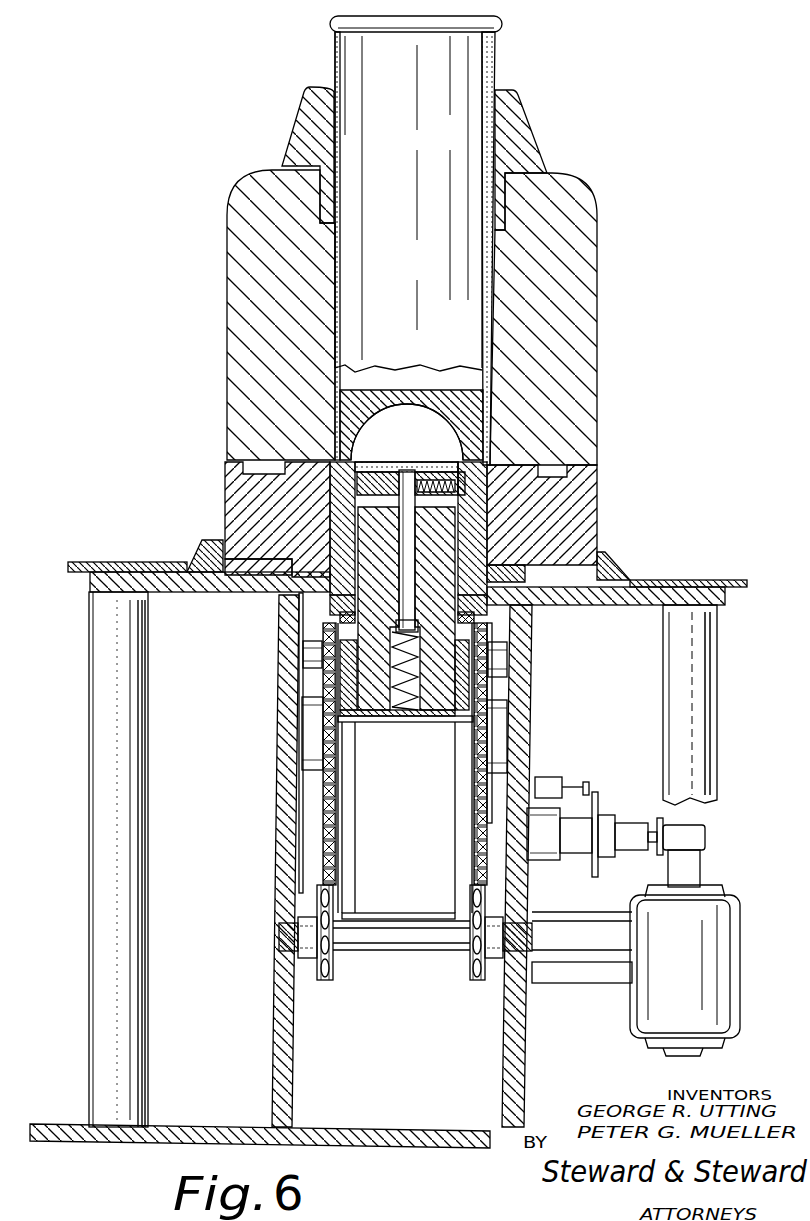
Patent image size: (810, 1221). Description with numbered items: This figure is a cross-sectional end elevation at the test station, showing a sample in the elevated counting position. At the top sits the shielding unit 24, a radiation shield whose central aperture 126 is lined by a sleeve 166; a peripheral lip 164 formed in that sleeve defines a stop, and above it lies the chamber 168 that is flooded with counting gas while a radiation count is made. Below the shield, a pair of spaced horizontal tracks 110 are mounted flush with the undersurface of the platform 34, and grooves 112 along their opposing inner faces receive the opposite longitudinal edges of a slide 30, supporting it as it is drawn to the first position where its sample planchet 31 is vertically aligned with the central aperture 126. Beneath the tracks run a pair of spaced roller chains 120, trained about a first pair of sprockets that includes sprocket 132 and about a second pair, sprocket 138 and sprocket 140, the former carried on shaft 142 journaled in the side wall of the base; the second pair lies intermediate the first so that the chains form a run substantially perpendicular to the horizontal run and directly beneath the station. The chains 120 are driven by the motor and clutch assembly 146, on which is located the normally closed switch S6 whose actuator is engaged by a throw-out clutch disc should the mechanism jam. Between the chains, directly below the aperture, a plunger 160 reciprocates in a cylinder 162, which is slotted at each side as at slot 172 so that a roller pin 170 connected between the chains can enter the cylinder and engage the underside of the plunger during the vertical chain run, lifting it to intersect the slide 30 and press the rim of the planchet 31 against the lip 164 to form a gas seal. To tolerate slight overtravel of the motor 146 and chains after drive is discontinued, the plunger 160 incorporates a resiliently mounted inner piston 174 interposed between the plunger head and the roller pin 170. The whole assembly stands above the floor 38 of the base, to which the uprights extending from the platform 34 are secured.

The shielding unit 24 is at (598, 213).
The slide 30 is at (520, 574).
The sample planchet 31 is at (445, 471).
The platform 34 is at (125, 562).
The floor 38 is at (341, 1130).
The tracks 110 is at (330, 604).
The grooves 112 is at (340, 622).
The roller chains 120 is at (333, 984).
The central aperture 126 is at (478, 484).
The sprocket 132 is at (305, 657).
The sprocket 138 is at (316, 960).
The sprocket 140 is at (307, 722).
The shaft 142 is at (376, 940).
The motor and clutch assembly 146 is at (703, 876).
The plunger 160 is at (455, 531).
The sleeve or cylinder 162 is at (343, 684).
The peripheral lip 164 is at (358, 462).
The sleeve 166 is at (478, 478).
The chamber 168 is at (455, 405).
The roller pin 170 is at (373, 725).
The slot 172 is at (472, 795).
The inner piston 174 is at (370, 483).
The switch S6 is at (548, 777).